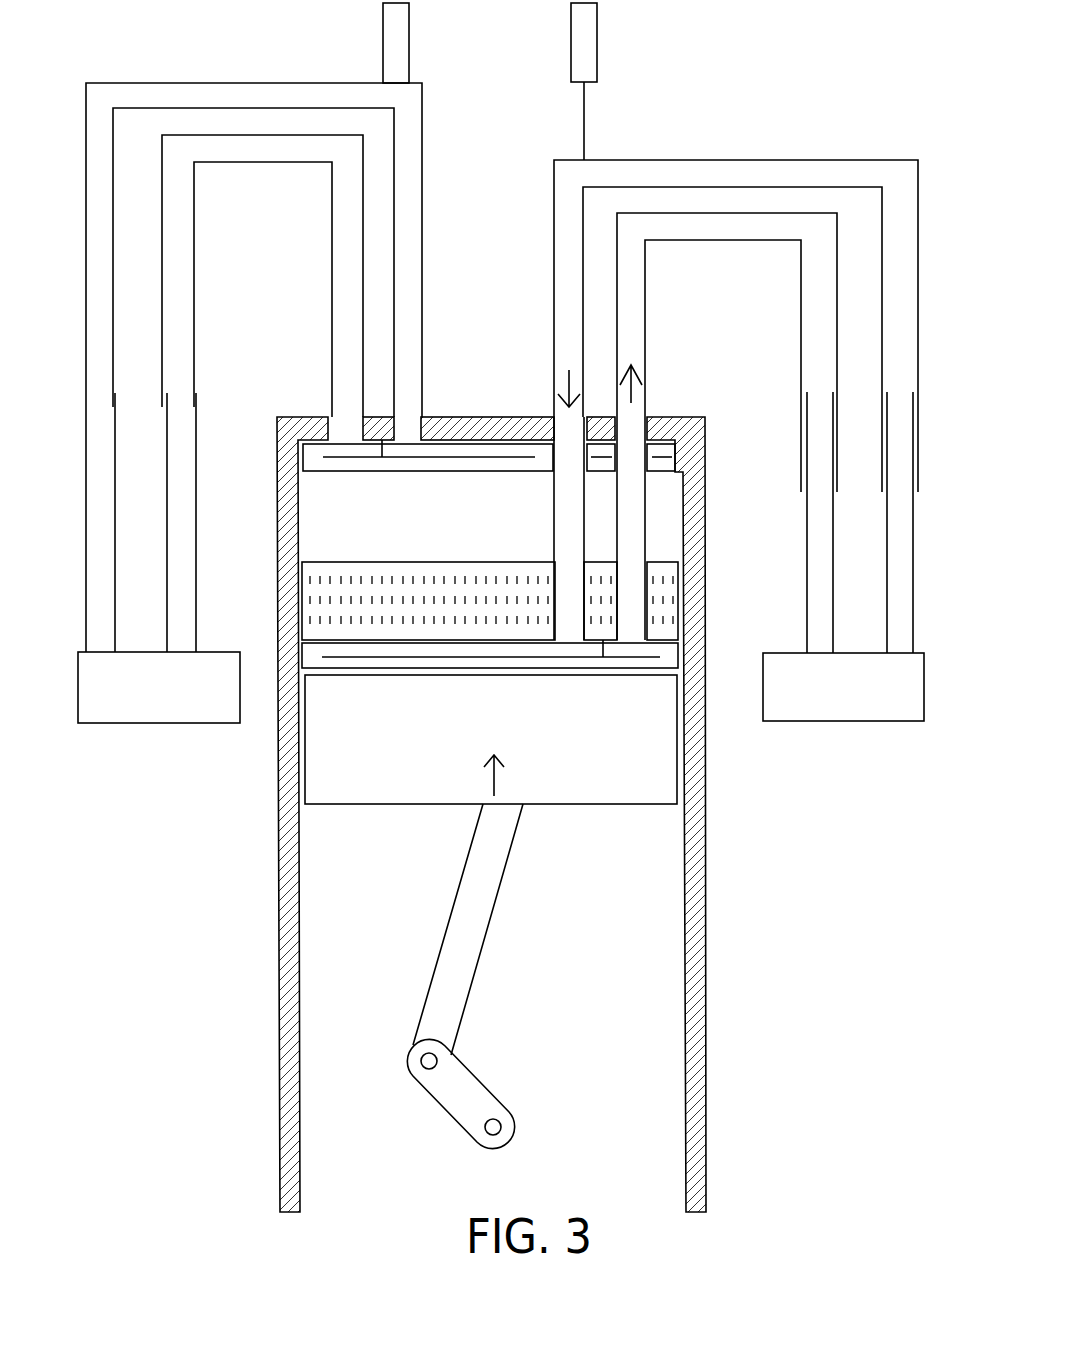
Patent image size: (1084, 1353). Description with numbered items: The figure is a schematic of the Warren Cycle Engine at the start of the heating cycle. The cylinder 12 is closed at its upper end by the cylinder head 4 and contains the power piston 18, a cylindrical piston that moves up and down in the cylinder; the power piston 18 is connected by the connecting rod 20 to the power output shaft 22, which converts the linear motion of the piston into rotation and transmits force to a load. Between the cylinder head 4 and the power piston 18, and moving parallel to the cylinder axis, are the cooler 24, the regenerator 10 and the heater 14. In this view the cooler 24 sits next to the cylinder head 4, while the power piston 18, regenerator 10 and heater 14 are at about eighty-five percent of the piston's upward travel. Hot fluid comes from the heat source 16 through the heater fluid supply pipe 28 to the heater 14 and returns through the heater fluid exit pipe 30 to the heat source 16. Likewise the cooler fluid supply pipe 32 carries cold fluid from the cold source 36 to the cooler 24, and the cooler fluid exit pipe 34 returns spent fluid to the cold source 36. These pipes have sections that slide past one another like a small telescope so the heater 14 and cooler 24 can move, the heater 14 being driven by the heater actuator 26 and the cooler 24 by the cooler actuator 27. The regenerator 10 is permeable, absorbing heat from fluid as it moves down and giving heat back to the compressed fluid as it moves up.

The cylinder head 4 is at (512, 430).
The regenerator 10 is at (663, 596).
The cylinder 12 is at (368, 516).
The heater 14 is at (674, 660).
The heat source 16 is at (841, 690).
The power piston 18 is at (483, 729).
The connecting rod 20 is at (470, 936).
The power output shaft 22 is at (466, 1097).
The cooler 24 is at (313, 462).
The heater actuator 26 is at (582, 35).
The cooler actuator 27 is at (397, 48).
The heater fluid supply pipe 28 is at (897, 491).
The heater fluid exit pipe 30 is at (813, 551).
The cooler fluid supply pipe 32 is at (203, 96).
The cooler fluid exit pipe 34 is at (181, 498).
The cold source 36 is at (163, 699).